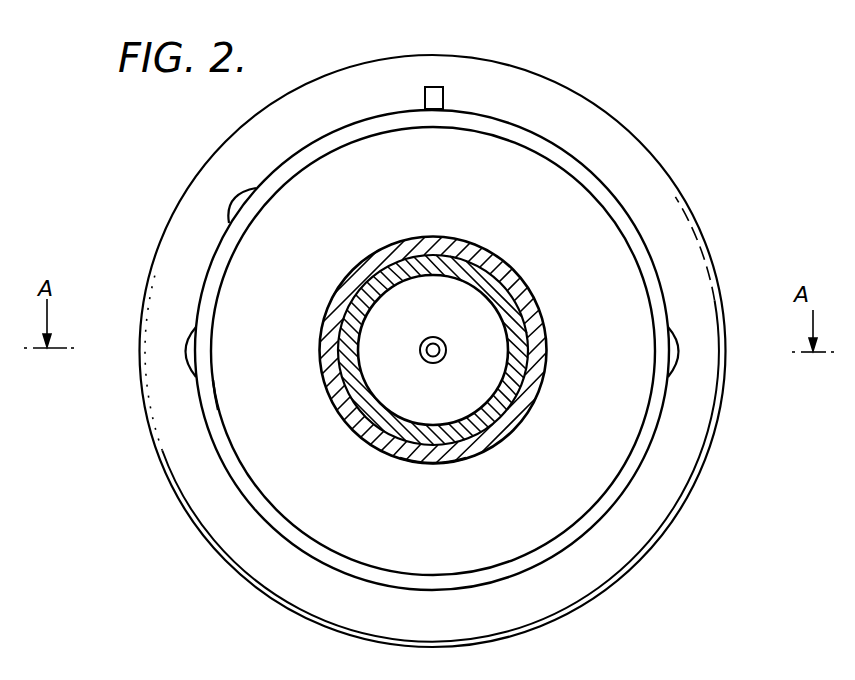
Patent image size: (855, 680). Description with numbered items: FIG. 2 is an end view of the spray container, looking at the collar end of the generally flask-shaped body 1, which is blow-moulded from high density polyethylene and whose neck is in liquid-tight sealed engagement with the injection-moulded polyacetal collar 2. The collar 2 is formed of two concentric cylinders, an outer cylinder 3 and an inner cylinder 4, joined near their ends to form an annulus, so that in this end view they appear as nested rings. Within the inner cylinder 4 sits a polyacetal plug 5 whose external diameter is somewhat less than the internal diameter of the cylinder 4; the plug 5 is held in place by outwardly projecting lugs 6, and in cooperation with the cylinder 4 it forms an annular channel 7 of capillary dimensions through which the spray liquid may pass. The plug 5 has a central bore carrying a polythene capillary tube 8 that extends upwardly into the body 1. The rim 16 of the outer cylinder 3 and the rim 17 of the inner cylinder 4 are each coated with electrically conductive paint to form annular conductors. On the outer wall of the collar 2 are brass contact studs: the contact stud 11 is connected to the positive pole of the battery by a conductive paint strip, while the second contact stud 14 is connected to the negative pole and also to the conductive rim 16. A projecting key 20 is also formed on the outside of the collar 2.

The body 1 is at (600, 592).
The collar 2 is at (590, 165).
The outer cylinder 3 is at (330, 150).
The inner cylinder 4 is at (545, 343).
The plug 5 is at (512, 405).
The lugs 6 is at (427, 461).
The annular channel 7 is at (523, 302).
The capillary tube 8 is at (441, 361).
The contact stud 11 is at (240, 208).
The second contact stud 14 is at (187, 352).
The rim 16 is at (214, 395).
The rim 17 is at (497, 258).
The projecting key 20 is at (433, 87).